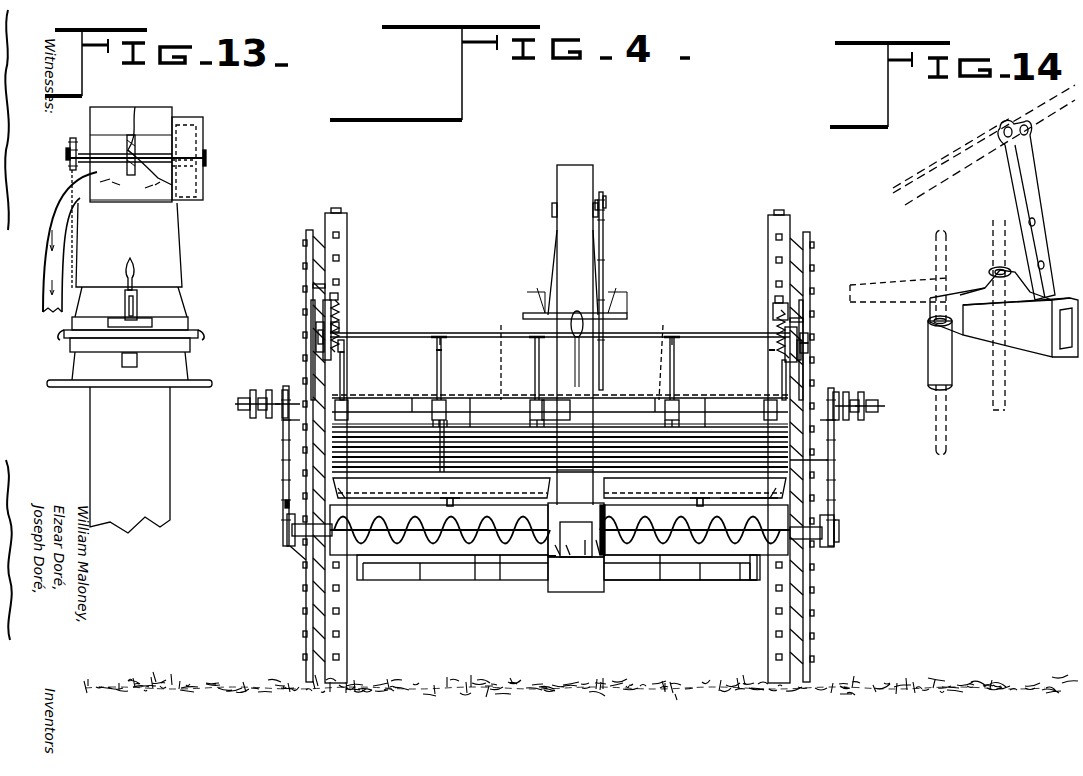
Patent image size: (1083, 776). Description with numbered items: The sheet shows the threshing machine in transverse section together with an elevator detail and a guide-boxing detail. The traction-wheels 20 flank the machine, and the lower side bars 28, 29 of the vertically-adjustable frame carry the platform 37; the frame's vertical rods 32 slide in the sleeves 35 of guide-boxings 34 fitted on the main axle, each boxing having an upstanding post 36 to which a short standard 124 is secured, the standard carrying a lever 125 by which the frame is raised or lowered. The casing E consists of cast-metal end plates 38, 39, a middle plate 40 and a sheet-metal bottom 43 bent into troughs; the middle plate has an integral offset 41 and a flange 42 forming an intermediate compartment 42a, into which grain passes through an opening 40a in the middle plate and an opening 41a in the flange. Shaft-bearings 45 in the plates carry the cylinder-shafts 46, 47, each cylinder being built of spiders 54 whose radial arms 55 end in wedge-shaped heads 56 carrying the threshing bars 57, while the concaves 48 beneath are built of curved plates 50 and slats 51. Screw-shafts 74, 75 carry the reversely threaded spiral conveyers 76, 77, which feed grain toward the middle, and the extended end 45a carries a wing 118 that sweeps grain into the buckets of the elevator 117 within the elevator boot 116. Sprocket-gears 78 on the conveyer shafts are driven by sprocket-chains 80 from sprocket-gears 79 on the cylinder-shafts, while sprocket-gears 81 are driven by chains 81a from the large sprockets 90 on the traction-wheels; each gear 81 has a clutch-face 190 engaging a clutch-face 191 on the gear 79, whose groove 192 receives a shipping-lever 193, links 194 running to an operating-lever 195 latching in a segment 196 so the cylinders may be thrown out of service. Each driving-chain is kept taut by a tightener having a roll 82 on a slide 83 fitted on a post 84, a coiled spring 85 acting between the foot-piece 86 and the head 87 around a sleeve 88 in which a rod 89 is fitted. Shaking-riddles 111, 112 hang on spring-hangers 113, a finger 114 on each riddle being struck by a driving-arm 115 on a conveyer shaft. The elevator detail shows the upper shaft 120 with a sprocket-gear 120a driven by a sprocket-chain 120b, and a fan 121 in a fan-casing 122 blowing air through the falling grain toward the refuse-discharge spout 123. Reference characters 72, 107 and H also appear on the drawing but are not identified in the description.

In FIG. 4, the traction-wheels 20 is at (347, 218).
In FIG. 4, the side bar 28 is at (370, 580).
In FIG. 4, the side bar 29 is at (753, 580).
In FIG. 14, the vertical rods 32 is at (1008, 410).
In FIG. 14, the guide-boxings 34 is at (1000, 338).
In FIG. 14, the sleeves 35 is at (990, 275).
In FIG. 14, the upstanding post 36 is at (1045, 262).
In FIG. 4, the platform 37 is at (676, 580).
In FIG. 4, the end plate 38 is at (330, 498).
In FIG. 4, the end plate 39 is at (834, 459).
In FIG. 4, the middle plate 40 is at (570, 535).
In FIG. 4, the opening 40a is at (548, 560).
In FIG. 4, the integral offset 41 is at (586, 557).
In FIG. 4, the opening 41a is at (600, 557).
In FIG. 4, the flange 42 is at (603, 512).
In FIG. 4, the intermediate compartment 42a is at (560, 557).
In FIG. 4, the bottom 43 is at (500, 580).
In FIG. 4, the shaft-bearings 45 is at (345, 400).
In FIG. 4, the extended end of screw-conveyer shaft 45a is at (570, 557).
In FIG. 4, the cylinder-shaft 46 is at (413, 398).
In FIG. 4, the cylinder-shaft 47 is at (655, 398).
In FIG. 4, the concave 48 is at (470, 398).
In FIG. 4, the curved plates 50 is at (442, 398).
In FIG. 4, the slats or bars 51 is at (403, 437).
In FIG. 4, the spiders 54 is at (444, 345).
In FIG. 4, the radial arms 55 is at (437, 349).
In FIG. 4, the wedge-shaped heads 56 is at (446, 340).
In FIG. 4, the threshing bars or slats 57 is at (408, 333).
In FIG. 4, the frame beam 72 is at (388, 395).
In FIG. 4, the screw-shaft 74 is at (726, 580).
In FIG. 4, the screw-shaft 75 is at (410, 548).
In FIG. 4, the spiral conveyer 76 is at (640, 555).
In FIG. 4, the spiral conveyer 77 is at (476, 580).
In FIG. 4, the sprocket-gears 78 is at (287, 542).
In FIG. 4, the sprocket-gears 79 is at (282, 395).
In FIG. 4, the sprocket-chains 80 is at (283, 453).
In FIG. 4, the sprocket-gears 81 is at (312, 340).
In FIG. 4, the sprocket-chains 81a is at (826, 319).
In FIG. 4, the roll 82 is at (318, 338).
In FIG. 4, the slide 83 is at (316, 328).
In FIG. 4, the vertical post 84 is at (345, 368).
In FIG. 4, the coiled spring 85 is at (340, 314).
In FIG. 4, the foot-piece 86 is at (344, 348).
In FIG. 4, the head 87 is at (334, 305).
In FIG. 4, the sleeve 88 is at (340, 325).
In FIG. 4, the rod 89 is at (338, 298).
In FIG. 4, the large sprockets 90 is at (306, 568).
In FIG. 4, the brace 107 is at (290, 556).
In FIG. 4, the shaking-riddle 111 is at (730, 498).
In FIG. 4, the shaking-riddle 112 is at (540, 498).
In FIG. 4, the spring-hangers 113 is at (340, 489).
In FIG. 4, the finger 114 is at (462, 494).
In FIG. 4, the driving-arm 115 is at (450, 580).
In FIG. 13, the elevator boot or casing 116 is at (127, 528).
In FIG. 4, the elevator boot or casing 116 is at (557, 183).
In FIG. 13, the endless elevator 117 is at (137, 107).
In FIG. 4, the wing or blade 118 is at (578, 560).
In FIG. 13, the upper shaft 120 is at (95, 145).
In FIG. 13, the sprocket-gear 120a is at (70, 150).
In FIG. 13, the sprocket-chain 120b is at (68, 165).
In FIG. 13, the fan or blower 121 is at (190, 140).
In FIG. 13, the fan-casing 122 is at (203, 128).
In FIG. 13, the refuse-discharge spout 123 is at (44, 286).
In FIG. 14, the short standards 124 is at (1022, 203).
In FIG. 14, the levers 125 is at (920, 180).
In FIG. 4, the clutch-face 190 is at (290, 423).
In FIG. 4, the clutch-face 191 is at (283, 420).
In FIG. 4, the groove 192 is at (256, 390).
In FIG. 4, the shipping-levers 193 is at (240, 400).
In FIG. 4, the links or pitmen 194 is at (660, 372).
In FIG. 4, the operating-lever 195 is at (607, 332).
In FIG. 4, the segment 196 is at (585, 368).
In FIG. 4, the casing E is at (284, 503).
In FIG. 14, the arm H is at (888, 278).